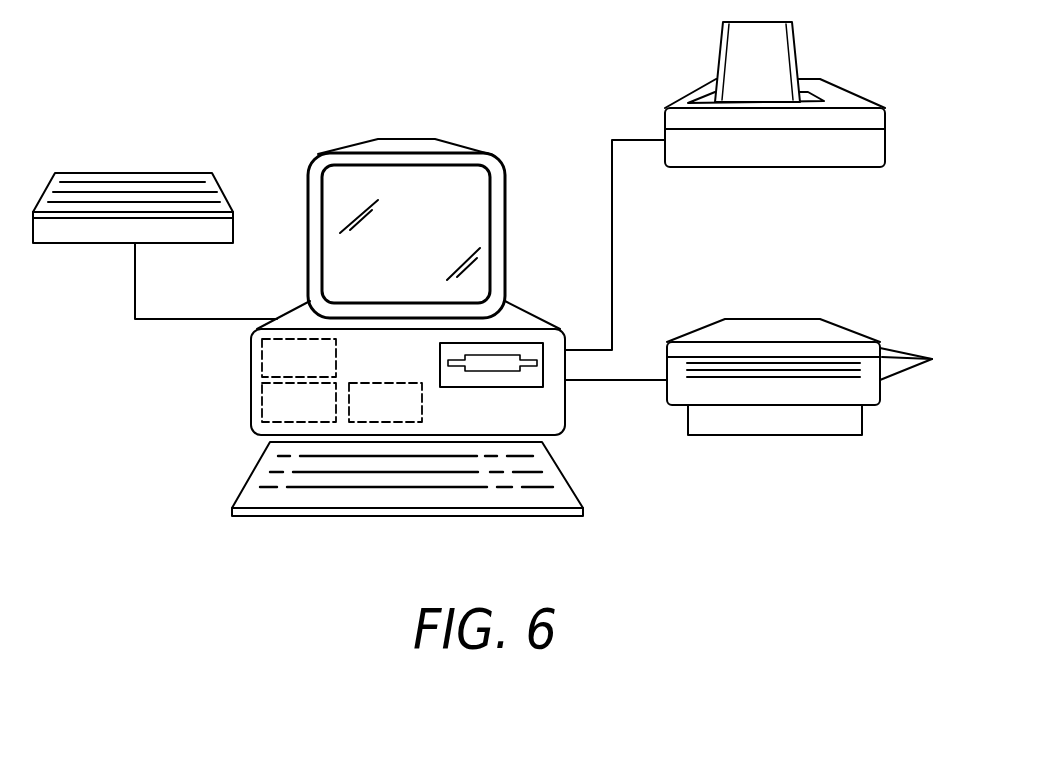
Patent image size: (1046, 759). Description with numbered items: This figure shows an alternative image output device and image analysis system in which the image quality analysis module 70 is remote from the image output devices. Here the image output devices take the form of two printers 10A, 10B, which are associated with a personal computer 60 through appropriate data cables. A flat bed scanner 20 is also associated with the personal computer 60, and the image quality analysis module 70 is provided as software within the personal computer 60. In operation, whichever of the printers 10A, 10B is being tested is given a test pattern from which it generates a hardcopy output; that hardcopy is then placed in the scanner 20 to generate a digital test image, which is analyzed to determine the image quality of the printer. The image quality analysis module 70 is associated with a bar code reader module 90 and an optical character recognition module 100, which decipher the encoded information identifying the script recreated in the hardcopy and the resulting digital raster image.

The flat bed scanner 20 is at (163, 172).
The personal computer 60 is at (457, 145).
The image quality analysis module 70 is at (316, 368).
The bar code reader module 90 is at (316, 413).
The optical character recognition (OCR) module 100 is at (409, 413).
The printer 10A is at (837, 93).
The printer 10B is at (838, 332).